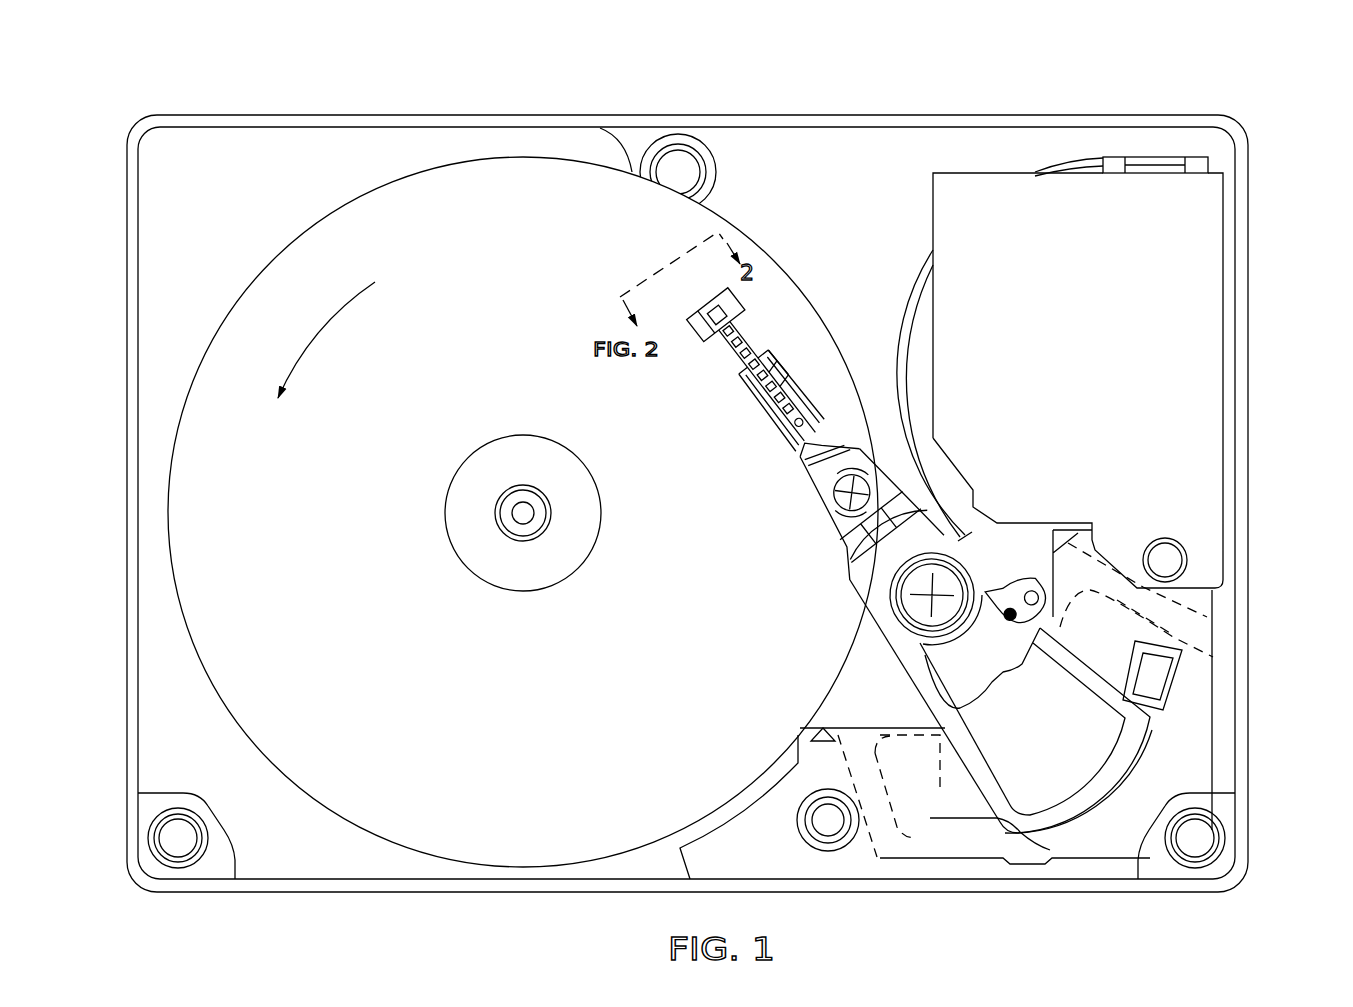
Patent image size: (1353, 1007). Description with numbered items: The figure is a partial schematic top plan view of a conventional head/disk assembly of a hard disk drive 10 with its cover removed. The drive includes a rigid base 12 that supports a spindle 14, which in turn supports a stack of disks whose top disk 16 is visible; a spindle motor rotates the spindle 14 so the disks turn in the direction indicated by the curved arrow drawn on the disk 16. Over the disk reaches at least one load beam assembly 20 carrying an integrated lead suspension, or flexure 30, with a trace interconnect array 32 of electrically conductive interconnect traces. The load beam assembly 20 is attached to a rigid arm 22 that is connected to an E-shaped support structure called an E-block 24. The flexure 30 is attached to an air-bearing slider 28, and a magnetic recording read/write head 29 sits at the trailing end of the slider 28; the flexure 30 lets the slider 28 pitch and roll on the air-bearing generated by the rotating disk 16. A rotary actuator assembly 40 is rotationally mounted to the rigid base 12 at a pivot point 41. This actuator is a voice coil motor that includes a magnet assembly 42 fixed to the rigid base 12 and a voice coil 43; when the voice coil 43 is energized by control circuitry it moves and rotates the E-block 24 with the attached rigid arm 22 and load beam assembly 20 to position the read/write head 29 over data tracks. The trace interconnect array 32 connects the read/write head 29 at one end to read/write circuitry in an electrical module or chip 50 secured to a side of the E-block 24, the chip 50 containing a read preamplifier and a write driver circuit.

The hard disk drive 10 is at (180, 95).
The rigid base 12 is at (350, 893).
The spindle 14 is at (525, 435).
The disk 16 is at (505, 835).
The load beam assembly 20 is at (790, 482).
The rigid arm 22 is at (815, 512).
The E-block 24 is at (866, 580).
The slider 28 is at (745, 312).
The read/write head 29 is at (712, 300).
The flexure 30 is at (737, 332).
The trace interconnect array 32 is at (785, 380).
The rotary actuator assembly 40 is at (950, 506).
The pivot point 41 is at (900, 610).
The magnet assembly 42 is at (1083, 600).
The voice coil 43 is at (1163, 710).
The electrical module or chip 50 is at (1010, 525).